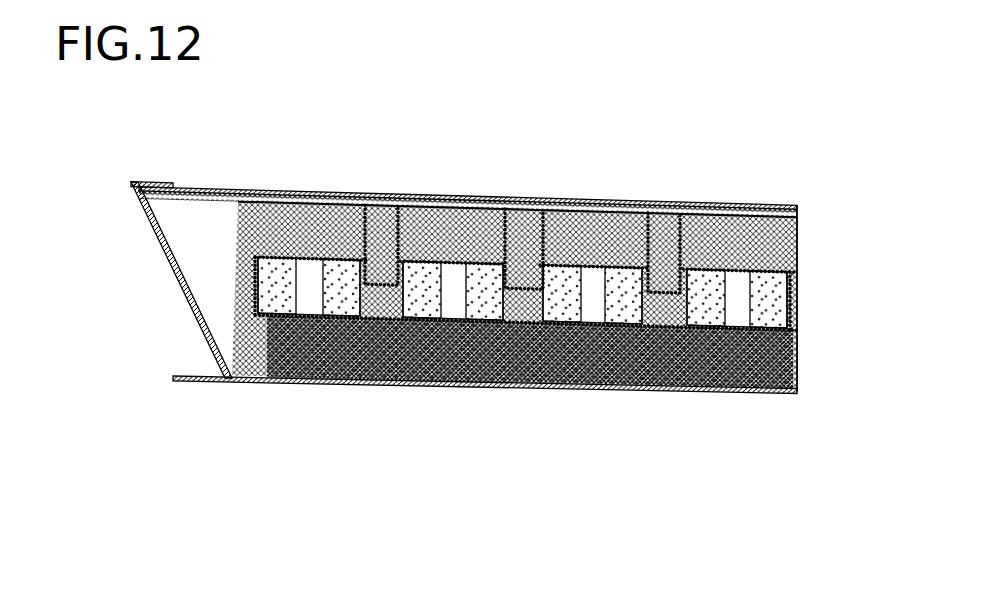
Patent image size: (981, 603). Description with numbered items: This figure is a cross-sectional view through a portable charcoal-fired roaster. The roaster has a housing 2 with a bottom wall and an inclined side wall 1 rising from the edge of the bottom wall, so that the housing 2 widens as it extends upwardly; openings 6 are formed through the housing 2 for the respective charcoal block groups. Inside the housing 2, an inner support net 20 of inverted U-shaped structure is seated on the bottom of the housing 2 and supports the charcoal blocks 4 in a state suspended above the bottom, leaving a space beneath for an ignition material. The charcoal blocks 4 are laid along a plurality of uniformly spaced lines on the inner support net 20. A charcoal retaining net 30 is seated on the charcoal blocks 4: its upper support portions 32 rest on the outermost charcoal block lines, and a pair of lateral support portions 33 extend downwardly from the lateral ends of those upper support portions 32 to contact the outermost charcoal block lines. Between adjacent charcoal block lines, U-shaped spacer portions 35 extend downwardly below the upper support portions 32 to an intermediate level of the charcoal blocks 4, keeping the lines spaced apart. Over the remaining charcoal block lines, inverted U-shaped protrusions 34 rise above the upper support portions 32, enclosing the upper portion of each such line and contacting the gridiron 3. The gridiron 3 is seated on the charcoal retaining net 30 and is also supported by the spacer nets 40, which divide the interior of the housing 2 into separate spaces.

The inclined side wall 1 is at (180, 277).
The housing 2 is at (150, 243).
The gridiron 3 is at (598, 210).
The charcoal blocks 4 is at (268, 286).
The openings 6 is at (213, 348).
The inner support net 20 is at (763, 341).
The charcoal retaining net 30 is at (806, 257).
The upper support portions 32 is at (717, 263).
The lateral support portions 33 is at (796, 301).
The protrusions 34 is at (490, 200).
The spacer portions 35 is at (664, 297).
The spacer nets 40 is at (303, 200).